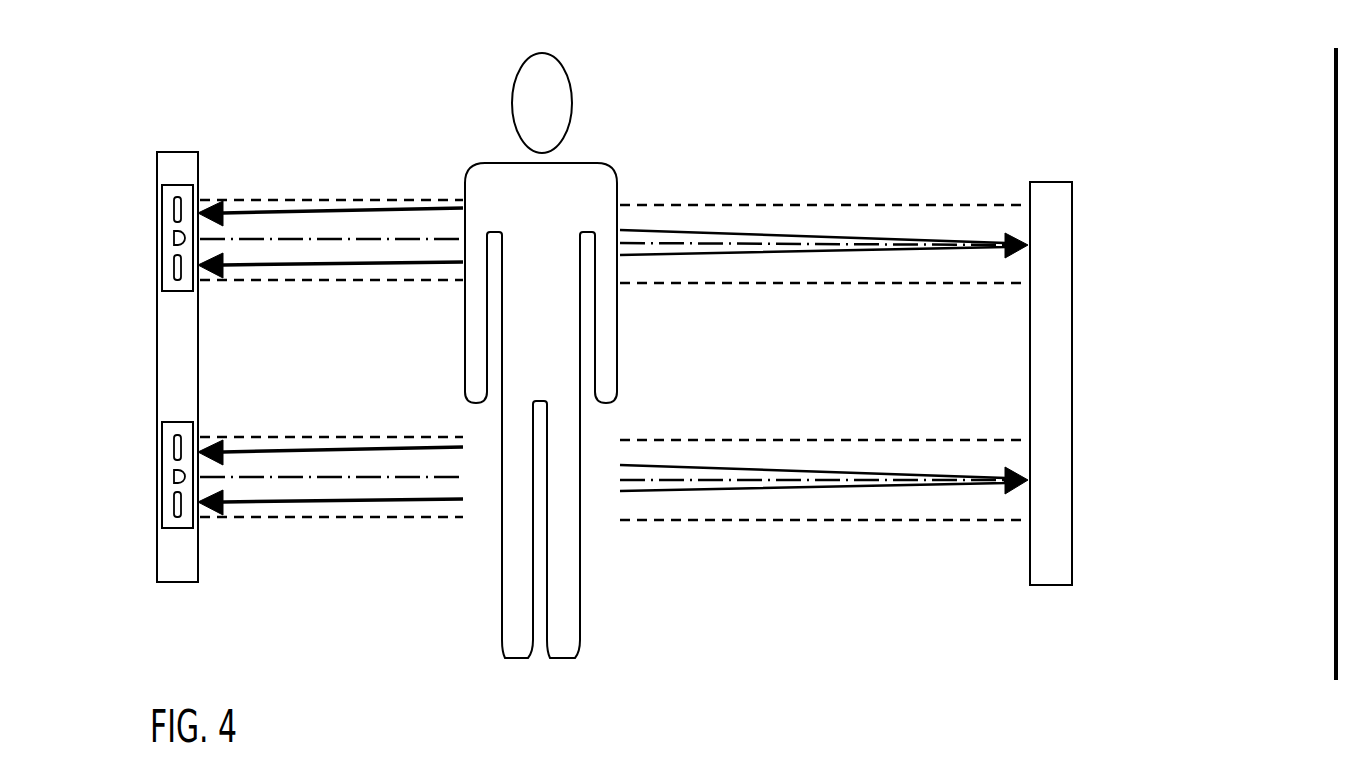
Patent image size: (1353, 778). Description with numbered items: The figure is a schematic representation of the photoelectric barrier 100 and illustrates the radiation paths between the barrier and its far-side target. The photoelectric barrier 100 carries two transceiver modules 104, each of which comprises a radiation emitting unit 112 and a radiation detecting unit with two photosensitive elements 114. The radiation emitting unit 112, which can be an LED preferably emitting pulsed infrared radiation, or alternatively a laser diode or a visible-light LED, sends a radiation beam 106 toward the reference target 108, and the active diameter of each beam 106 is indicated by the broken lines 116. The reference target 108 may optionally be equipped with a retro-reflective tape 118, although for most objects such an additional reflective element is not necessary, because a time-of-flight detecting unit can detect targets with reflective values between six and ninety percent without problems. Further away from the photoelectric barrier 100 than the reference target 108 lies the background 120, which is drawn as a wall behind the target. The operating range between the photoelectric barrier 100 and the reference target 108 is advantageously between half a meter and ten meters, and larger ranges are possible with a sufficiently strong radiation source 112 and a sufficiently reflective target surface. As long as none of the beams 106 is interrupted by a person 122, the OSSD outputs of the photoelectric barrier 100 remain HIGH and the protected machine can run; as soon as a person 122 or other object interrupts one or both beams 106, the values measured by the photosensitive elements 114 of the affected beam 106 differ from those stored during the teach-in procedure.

The photoelectric barrier 100 is at (177, 158).
The transceiver module 104 is at (177, 291).
The radiation beam 106 is at (688, 232).
The reference target 108 is at (1048, 197).
The radiation emitting unit 112 is at (185, 237).
The photosensitive element 114 is at (182, 204).
The broken line 116 is at (952, 200).
The retro-reflective tape 118 is at (1027, 523).
The background 120 is at (1334, 425).
The person 122 is at (568, 72).